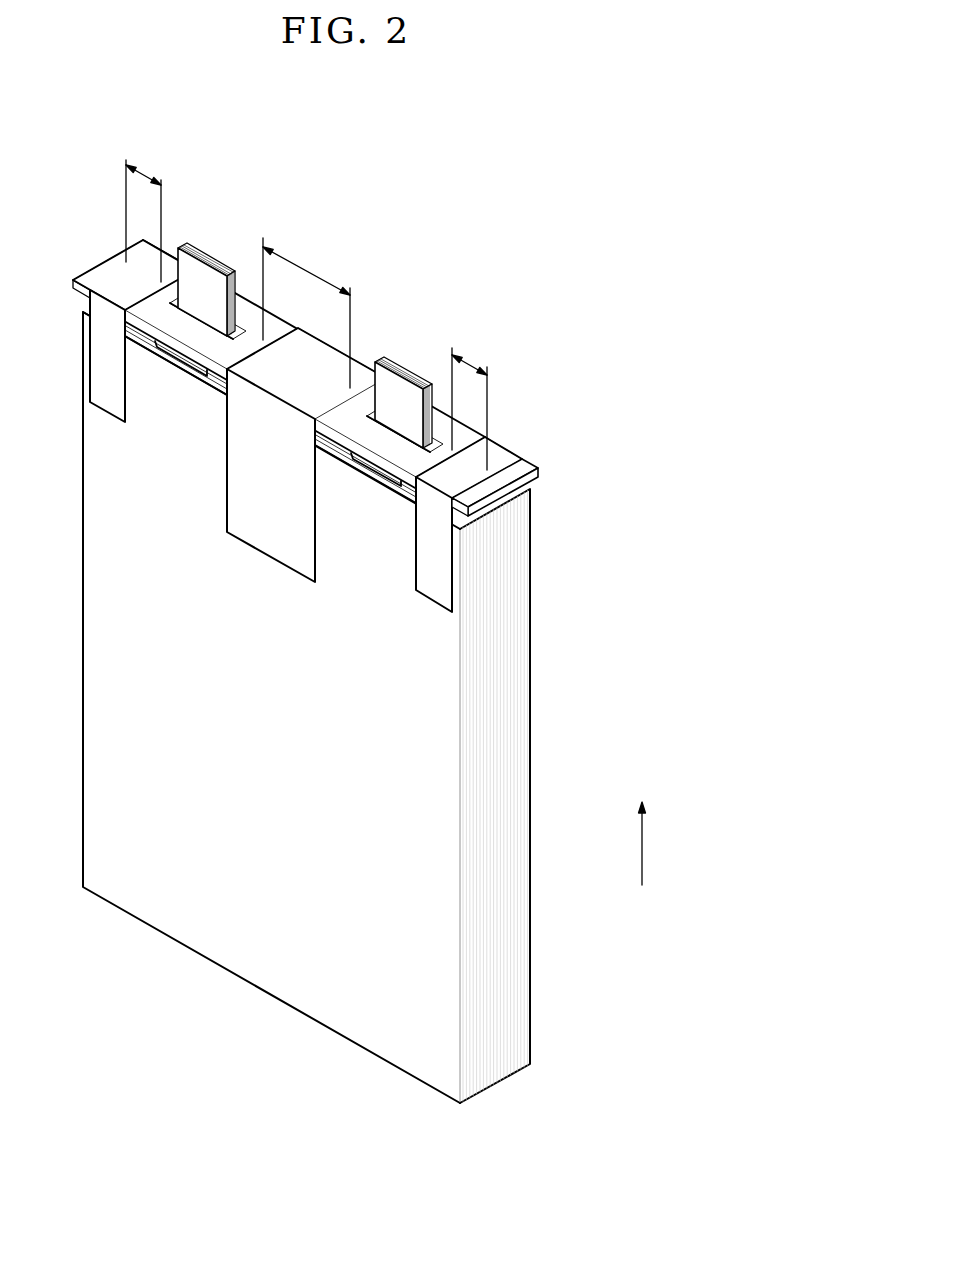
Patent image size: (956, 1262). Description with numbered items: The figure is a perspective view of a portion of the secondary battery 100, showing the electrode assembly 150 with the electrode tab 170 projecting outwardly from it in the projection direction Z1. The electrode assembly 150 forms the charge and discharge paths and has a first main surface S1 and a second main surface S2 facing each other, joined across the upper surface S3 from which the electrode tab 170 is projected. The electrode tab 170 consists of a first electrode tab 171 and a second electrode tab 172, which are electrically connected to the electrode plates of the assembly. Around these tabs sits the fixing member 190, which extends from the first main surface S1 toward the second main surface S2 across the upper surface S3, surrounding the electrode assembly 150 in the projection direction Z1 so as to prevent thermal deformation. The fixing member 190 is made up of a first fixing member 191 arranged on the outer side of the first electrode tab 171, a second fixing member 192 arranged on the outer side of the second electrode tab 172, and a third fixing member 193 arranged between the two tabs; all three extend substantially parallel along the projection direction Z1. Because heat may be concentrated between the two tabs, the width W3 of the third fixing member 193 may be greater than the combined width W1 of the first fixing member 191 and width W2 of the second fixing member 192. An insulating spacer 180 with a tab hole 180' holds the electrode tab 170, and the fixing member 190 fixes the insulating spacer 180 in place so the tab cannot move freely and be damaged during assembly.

The secondary battery 100 is at (356, 612).
The electrode assembly 150 is at (350, 671).
The electrode tab 170 is at (306, 287).
The first electrode tab 171 is at (208, 257).
The second electrode tab 172 is at (395, 367).
The insulating spacer 180 is at (510, 457).
The tab hole 180' is at (428, 377).
The fixing member 190 is at (297, 480).
The first fixing member 191 is at (105, 397).
The second fixing member 192 is at (428, 571).
The third fixing member 193 is at (268, 538).
The first main surface S1 is at (262, 965).
The second main surface S2 is at (531, 958).
The upper surface S3 is at (462, 522).
The width of the first fixing member W1 is at (148, 214).
The width of the second fixing member W2 is at (474, 404).
The width of the third fixing member W3 is at (306, 313).
The projection direction Z1 is at (657, 843).